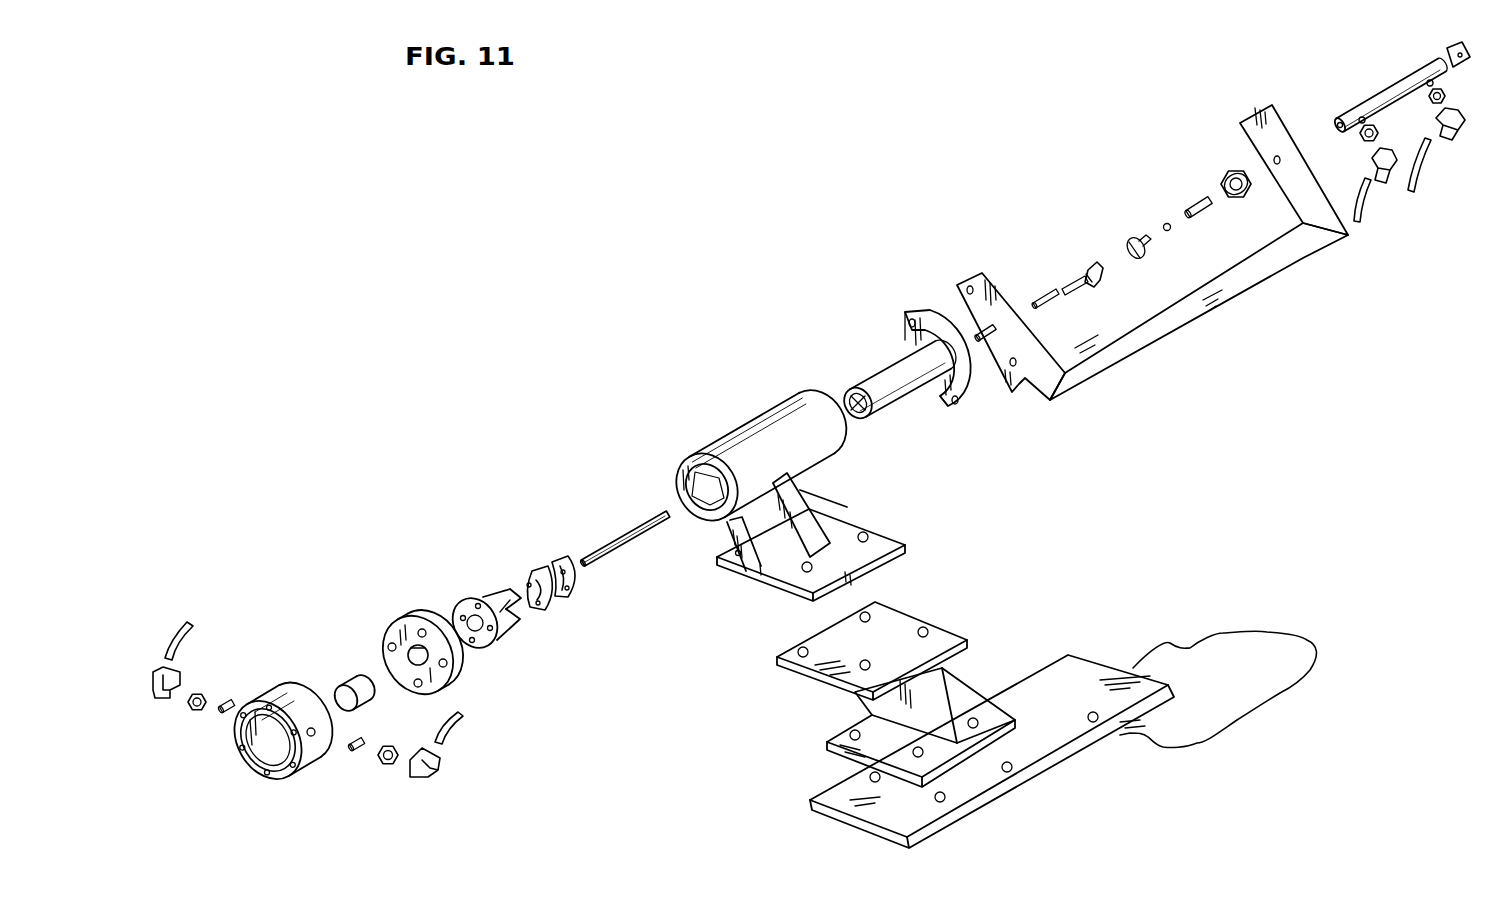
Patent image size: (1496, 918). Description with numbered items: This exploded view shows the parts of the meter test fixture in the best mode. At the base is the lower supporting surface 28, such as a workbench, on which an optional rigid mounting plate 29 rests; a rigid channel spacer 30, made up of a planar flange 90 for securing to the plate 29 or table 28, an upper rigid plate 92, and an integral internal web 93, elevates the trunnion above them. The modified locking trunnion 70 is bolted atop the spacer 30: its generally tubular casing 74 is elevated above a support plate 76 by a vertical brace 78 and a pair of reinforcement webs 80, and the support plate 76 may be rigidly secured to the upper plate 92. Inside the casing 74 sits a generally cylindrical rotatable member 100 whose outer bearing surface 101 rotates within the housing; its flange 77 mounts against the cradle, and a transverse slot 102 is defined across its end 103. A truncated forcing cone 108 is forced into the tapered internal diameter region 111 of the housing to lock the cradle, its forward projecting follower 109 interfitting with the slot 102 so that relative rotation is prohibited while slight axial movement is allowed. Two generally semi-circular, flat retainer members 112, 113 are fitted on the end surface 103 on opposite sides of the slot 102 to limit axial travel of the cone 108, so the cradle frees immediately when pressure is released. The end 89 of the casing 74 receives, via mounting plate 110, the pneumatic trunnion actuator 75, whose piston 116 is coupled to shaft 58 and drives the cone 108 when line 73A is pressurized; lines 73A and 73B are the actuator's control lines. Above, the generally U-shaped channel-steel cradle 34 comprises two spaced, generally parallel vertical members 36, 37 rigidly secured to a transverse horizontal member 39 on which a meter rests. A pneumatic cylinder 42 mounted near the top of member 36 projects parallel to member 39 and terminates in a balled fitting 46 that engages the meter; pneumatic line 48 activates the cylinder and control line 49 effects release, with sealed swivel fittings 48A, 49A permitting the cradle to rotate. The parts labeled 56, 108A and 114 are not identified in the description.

The lower supporting surface 28 is at (1236, 694).
The mounting plate 29 is at (1078, 693).
The channel spacer 30 is at (962, 627).
The cradle 34 is at (1210, 127).
The vertical cradle member 36 is at (1293, 195).
The vertical cradle member 37 is at (1008, 262).
The horizontal member 39 is at (1242, 283).
The pneumatic cylinder 42 is at (1390, 81).
The balled fitting 46 is at (1127, 247).
The pneumatic line 48 is at (1420, 165).
The pneumatic swivel fitting 48A is at (1455, 127).
The pneumatic control line 49 is at (1362, 195).
The pneumatic swivel fitting 49A is at (1372, 158).
The bolt 56 is at (1097, 267).
The shaft 58 is at (667, 523).
The locking trunnion 70 is at (688, 440).
The pneumatic line 73A is at (168, 647).
The pneumatic line 73B is at (450, 723).
The tubular casing 74 is at (763, 427).
The pneumatic trunnion actuator 75 is at (281, 671).
The support plate 76 is at (890, 523).
The flange 77 is at (905, 323).
The vertical brace 78 is at (772, 543).
The reinforcement webs 80 is at (807, 520).
The end of the casing 89 is at (678, 473).
The planar flange 90 is at (890, 742).
The upper plate 92 is at (893, 625).
The internal web 93 is at (942, 698).
The rotatable member 100 is at (857, 390).
The outer bearing surface 101 is at (923, 397).
The transverse slot 102 is at (852, 415).
The end of the bearing member 103 is at (878, 410).
The forcing cone 108 is at (488, 595).
The coupling tooth 108A is at (503, 617).
The follower 109 is at (518, 615).
The mounting plate 110 is at (397, 653).
The tapered internal diameter region 111 is at (700, 485).
The retainer member 112 is at (532, 571).
The retainer member 113 is at (577, 580).
The coupling face 114 is at (500, 615).
The piston 116 is at (368, 700).